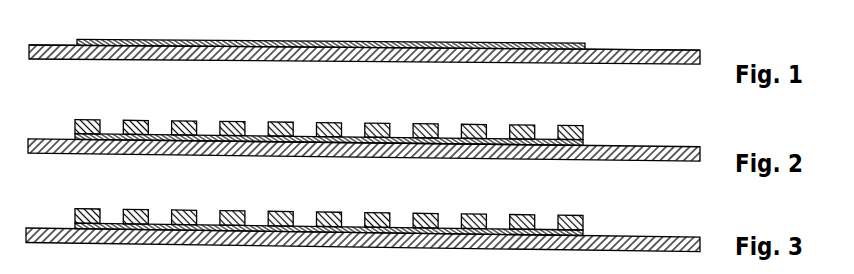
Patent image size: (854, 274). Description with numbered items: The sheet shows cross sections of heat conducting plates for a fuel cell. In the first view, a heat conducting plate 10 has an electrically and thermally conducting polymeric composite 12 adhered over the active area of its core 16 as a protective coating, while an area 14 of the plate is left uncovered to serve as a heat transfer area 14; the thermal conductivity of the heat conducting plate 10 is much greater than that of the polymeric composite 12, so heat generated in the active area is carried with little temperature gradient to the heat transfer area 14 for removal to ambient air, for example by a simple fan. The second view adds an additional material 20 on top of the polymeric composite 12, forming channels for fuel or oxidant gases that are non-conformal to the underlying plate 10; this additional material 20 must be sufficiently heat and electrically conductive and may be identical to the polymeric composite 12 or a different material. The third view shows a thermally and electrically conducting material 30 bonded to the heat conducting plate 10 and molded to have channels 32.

In FIG. 1, the heat conducting plate 10 is at (505, 63).
In FIG. 2, the heat conducting plate 10 is at (487, 159).
In FIG. 3, the heat conducting plate 10 is at (487, 249).
In FIG. 1, the polymeric composite 12 is at (113, 39).
In FIG. 2, the polymeric composite 12 is at (107, 133).
In FIG. 1, the heat transfer area 14 is at (624, 50).
In FIG. 1, the core 16 is at (38, 44).
In FIG. 2, the additional material 20 is at (279, 121).
In FIG. 3, the thermally and electrically conducting material 30 is at (229, 208).
In FIG. 3, the channels 32 is at (308, 218).